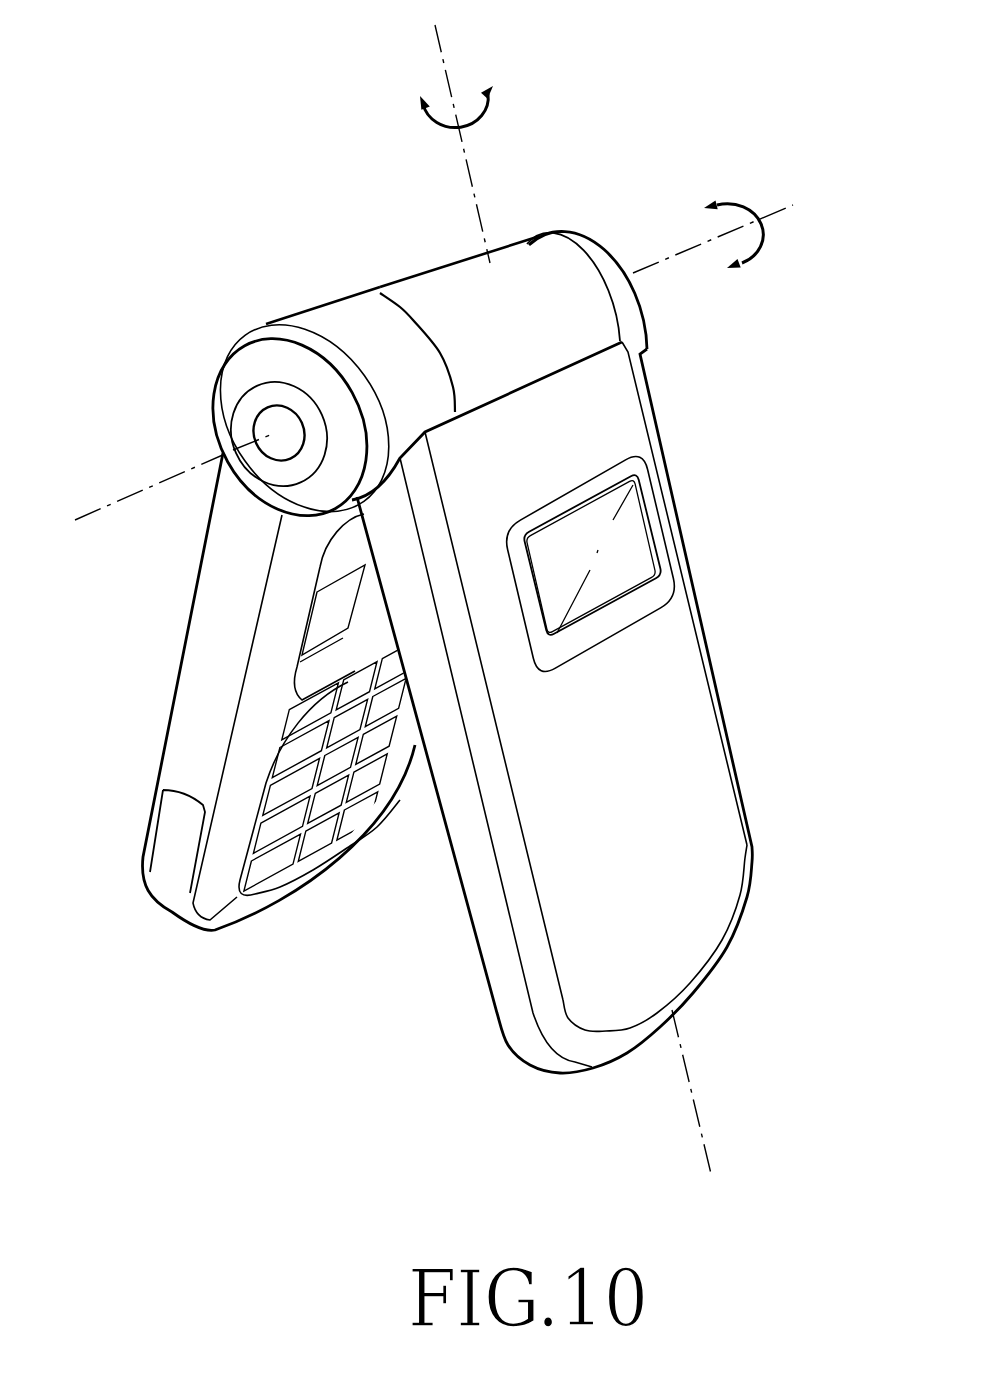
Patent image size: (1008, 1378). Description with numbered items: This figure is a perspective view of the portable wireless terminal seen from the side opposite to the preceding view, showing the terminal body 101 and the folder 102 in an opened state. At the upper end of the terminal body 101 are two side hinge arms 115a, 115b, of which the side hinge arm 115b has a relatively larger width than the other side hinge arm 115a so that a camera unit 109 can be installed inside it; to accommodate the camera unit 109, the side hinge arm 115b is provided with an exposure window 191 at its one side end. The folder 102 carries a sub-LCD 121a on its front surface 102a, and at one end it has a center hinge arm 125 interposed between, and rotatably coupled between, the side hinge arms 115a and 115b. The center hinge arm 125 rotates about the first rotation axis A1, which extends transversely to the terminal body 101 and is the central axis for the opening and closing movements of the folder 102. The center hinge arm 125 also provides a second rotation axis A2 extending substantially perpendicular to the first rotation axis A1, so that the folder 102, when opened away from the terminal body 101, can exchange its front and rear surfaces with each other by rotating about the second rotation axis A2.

The terminal body 101 is at (164, 741).
The folder 102 is at (748, 808).
The front surface 102a is at (683, 677).
The camera unit 109 is at (214, 417).
The side hinge arm 115a is at (632, 311).
The side hinge arm 115b is at (343, 300).
The sub-LCD 121a is at (637, 533).
The center hinge arm 125 is at (517, 264).
The exposure window 191 is at (277, 423).
The first rotation axis A1 is at (772, 210).
The second rotation axis A2 is at (446, 70).